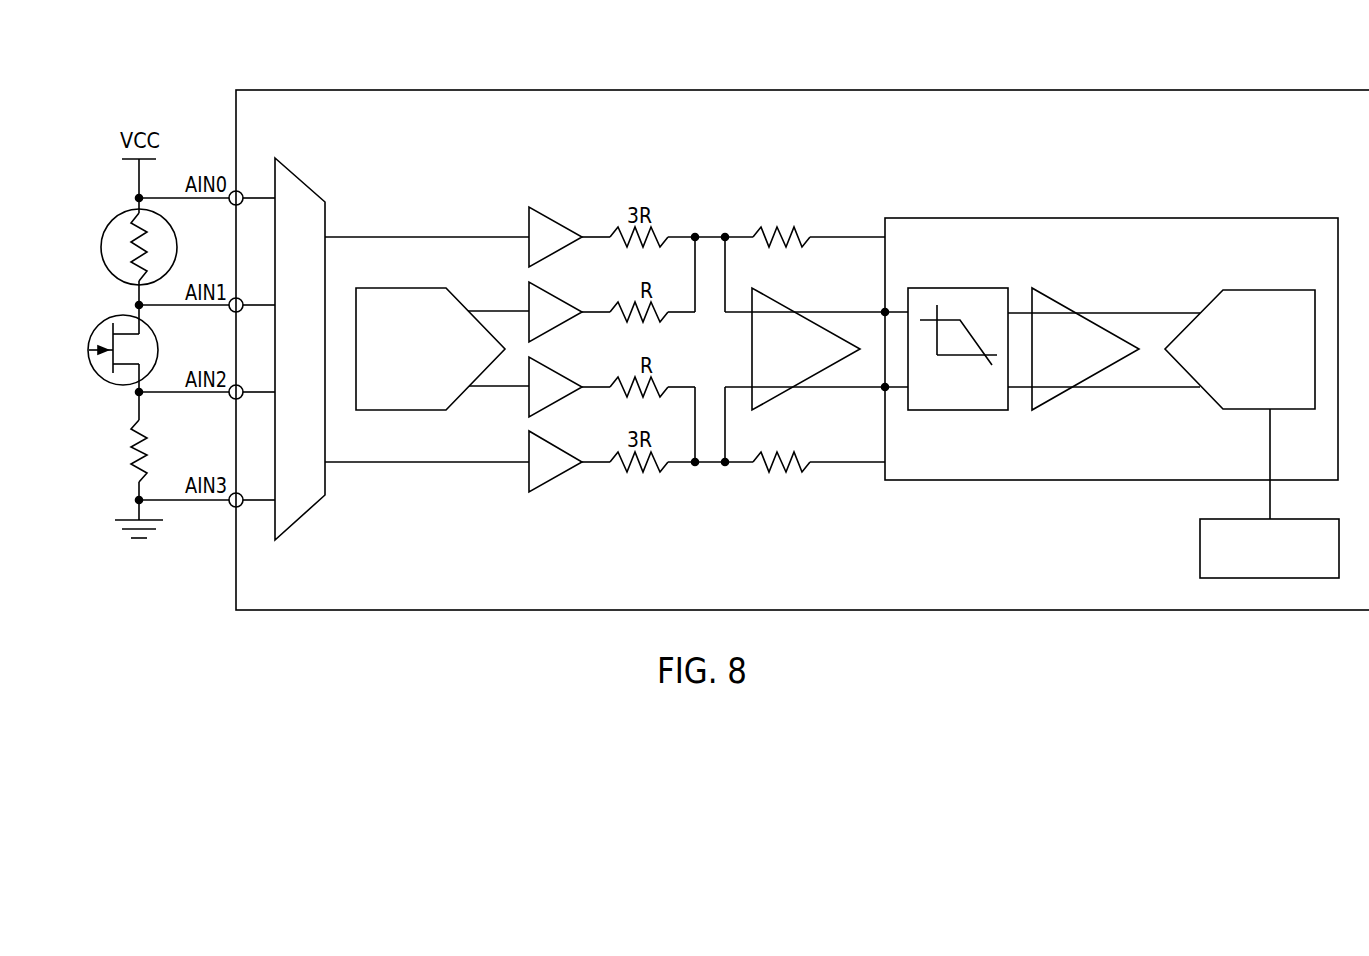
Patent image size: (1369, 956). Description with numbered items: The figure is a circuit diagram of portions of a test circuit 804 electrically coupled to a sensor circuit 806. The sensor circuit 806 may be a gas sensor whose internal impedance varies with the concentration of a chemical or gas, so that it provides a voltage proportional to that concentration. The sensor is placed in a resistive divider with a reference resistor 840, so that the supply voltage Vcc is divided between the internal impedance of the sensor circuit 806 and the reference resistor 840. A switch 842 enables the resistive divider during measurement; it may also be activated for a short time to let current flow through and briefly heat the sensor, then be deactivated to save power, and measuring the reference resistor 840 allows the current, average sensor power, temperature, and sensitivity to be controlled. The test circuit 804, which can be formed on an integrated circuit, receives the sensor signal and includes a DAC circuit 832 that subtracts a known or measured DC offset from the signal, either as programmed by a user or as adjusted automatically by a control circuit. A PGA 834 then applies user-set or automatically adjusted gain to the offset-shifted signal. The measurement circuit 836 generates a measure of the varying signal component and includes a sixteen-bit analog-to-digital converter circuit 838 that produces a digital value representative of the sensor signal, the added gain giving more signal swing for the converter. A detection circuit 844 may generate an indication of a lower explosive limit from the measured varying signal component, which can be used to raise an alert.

The test circuit 804 is at (805, 90).
The sensor circuit 806 is at (101, 247).
The DAC circuit 832 is at (400, 288).
The PGA 834 is at (782, 298).
The measurement circuit 836 is at (1113, 218).
The analog-to-digital converter circuit 838 is at (1270, 289).
The reference resistor 840 is at (131, 456).
The switch 842 is at (89, 350).
The detection circuit 844 is at (1296, 519).